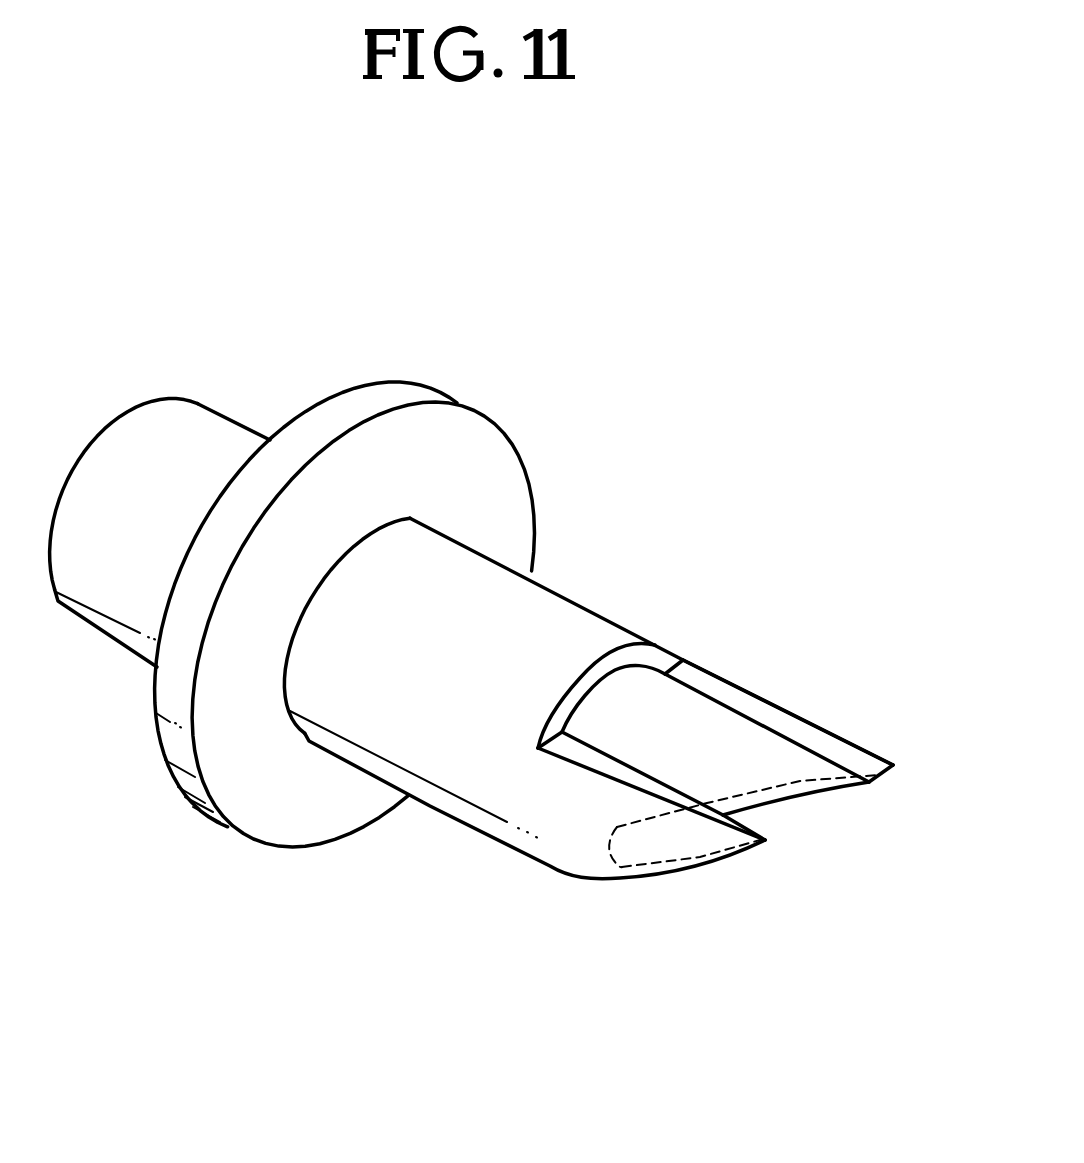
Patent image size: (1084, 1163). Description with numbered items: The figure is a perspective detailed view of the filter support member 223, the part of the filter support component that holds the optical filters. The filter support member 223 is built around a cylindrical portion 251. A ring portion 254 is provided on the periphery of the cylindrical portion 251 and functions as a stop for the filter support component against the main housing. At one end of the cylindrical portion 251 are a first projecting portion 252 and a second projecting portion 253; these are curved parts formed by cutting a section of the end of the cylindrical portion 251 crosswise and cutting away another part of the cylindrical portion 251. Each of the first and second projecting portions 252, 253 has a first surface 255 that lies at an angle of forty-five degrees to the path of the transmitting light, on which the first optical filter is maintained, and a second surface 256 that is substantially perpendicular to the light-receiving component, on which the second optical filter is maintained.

The filter support member 223 is at (750, 290).
The cylindrical portion 251 is at (200, 418).
The first projecting portion 252 is at (585, 857).
The second projecting portion 253 is at (770, 698).
The ring portion 254 is at (392, 398).
The first surface 255 is at (843, 787).
The second surface 256 is at (845, 752).